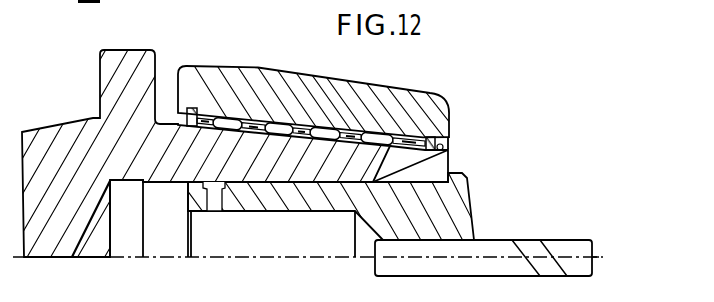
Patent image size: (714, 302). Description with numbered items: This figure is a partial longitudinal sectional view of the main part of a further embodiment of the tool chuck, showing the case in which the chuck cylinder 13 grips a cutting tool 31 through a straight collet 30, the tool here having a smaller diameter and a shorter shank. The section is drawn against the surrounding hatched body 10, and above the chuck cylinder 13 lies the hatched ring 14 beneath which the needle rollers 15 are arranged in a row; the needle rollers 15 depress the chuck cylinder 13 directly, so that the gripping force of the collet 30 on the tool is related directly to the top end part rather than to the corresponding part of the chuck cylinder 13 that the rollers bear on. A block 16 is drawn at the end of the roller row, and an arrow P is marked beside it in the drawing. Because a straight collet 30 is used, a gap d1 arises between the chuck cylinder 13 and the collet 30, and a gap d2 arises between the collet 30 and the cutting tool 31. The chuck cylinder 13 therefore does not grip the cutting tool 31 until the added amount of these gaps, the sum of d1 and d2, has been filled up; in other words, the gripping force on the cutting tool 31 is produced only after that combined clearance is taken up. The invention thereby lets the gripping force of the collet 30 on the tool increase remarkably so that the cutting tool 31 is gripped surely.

The housing body 10 is at (132, 117).
The chuck cylinder 13 is at (203, 162).
The outer bearing ring 14 is at (283, 90).
The needle rollers 15 is at (328, 130).
The spacer block 16 is at (432, 162).
The straight collet 30 is at (375, 200).
The cutting tool 31 is at (550, 245).
The applied load P is at (470, 140).
The gap between the chuck cylinder and the collet d1 is at (400, 183).
The gap between the collet and the cutting tool d2 is at (453, 240).